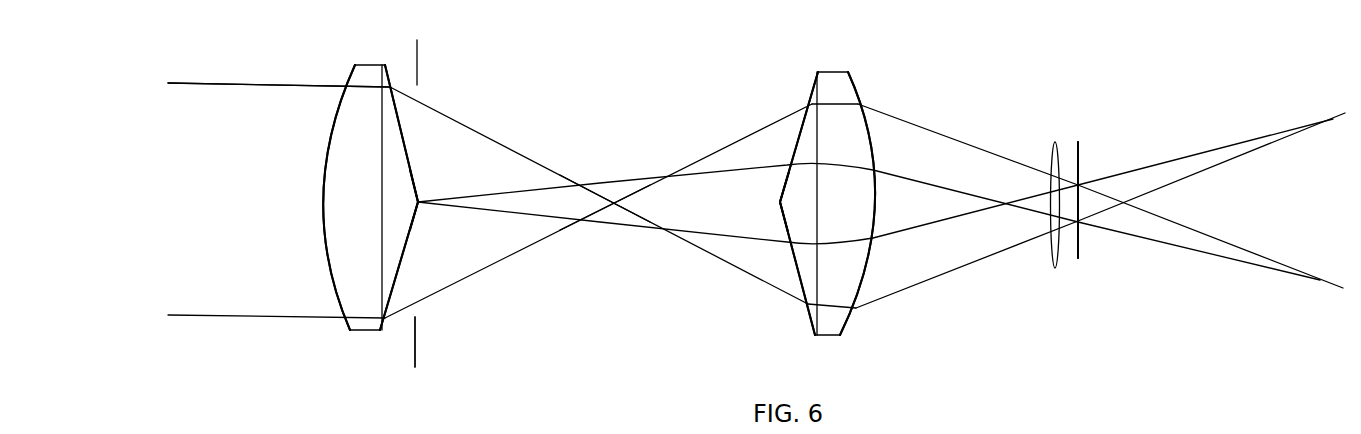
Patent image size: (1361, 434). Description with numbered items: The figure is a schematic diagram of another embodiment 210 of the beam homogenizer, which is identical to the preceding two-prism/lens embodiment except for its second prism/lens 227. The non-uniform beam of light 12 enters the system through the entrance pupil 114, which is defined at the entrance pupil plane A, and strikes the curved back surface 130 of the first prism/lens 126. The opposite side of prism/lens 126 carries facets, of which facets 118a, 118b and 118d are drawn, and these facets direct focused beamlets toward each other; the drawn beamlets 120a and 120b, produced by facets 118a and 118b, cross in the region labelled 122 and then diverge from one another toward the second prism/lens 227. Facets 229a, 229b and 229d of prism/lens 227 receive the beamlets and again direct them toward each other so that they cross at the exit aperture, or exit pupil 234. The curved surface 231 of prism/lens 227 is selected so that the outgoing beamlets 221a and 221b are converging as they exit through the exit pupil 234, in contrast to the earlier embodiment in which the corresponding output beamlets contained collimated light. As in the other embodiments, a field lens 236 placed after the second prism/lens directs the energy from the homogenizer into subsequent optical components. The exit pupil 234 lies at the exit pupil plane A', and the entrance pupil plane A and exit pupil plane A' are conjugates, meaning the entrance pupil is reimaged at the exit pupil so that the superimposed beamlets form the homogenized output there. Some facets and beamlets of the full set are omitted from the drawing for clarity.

The non-uniform beam of light 12 is at (275, 94).
The entrance pupil 114 is at (270, 183).
The prism/lens 126 is at (367, 332).
The curved back surface 130 is at (350, 323).
The facet 118a is at (400, 118).
The facet 118b is at (407, 246).
The facet 118d is at (397, 193).
The focused beamlet 120a is at (480, 138).
The focused beamlet 120b is at (490, 263).
The crossing region 122 is at (614, 153).
The prism/lens 227 is at (830, 338).
The facet 229a is at (810, 318).
The facet 229b is at (812, 92).
The facet 229d is at (790, 203).
The curved surface 231 is at (852, 84).
The beamlet 221a is at (970, 265).
The beamlet 221b is at (962, 142).
The field lens 236 is at (1055, 142).
The exit pupil 234 is at (1087, 173).
The beam homogenizer embodiment 210 is at (1004, 344).
The entrance pupil plane A is at (430, 350).
The exit pupil plane A' is at (1101, 217).